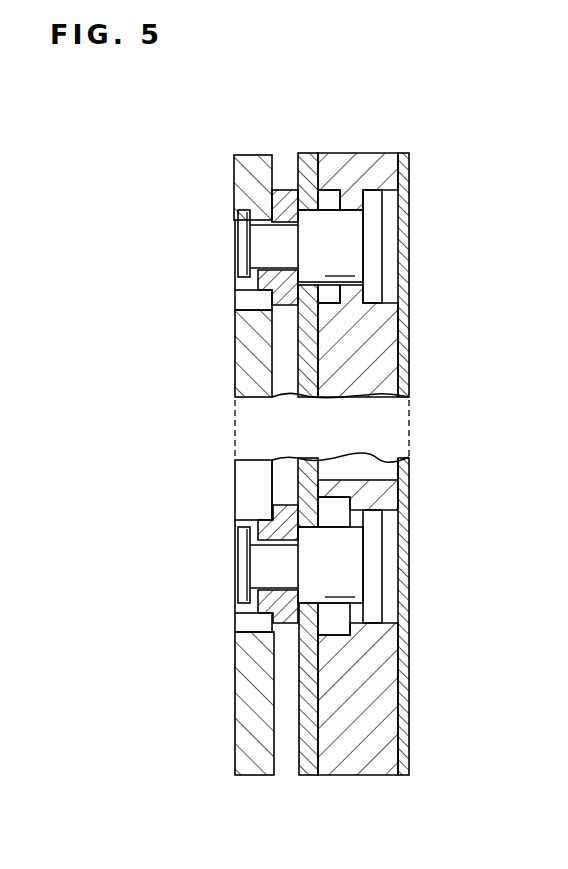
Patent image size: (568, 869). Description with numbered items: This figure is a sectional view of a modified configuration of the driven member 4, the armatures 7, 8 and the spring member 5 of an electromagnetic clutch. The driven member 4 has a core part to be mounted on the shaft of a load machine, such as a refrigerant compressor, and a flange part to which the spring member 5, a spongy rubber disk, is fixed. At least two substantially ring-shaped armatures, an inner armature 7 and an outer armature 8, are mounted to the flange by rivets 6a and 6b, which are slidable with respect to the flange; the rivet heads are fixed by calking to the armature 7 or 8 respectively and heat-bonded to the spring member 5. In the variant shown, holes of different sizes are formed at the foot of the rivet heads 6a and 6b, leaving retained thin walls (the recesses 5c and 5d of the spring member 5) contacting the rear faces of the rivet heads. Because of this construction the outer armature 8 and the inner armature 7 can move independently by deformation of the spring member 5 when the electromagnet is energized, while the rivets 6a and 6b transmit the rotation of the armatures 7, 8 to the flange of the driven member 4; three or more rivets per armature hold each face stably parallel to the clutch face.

The driven member 4 is at (305, 153).
The spring member 5 is at (387, 348).
The recess in rotor body 5c is at (327, 502).
The recess in rotor body 5d is at (242, 282).
The rivet 6a is at (258, 566).
The rivet 6b is at (260, 245).
The inner armature 7 is at (242, 348).
The outer armature 8 is at (240, 178).